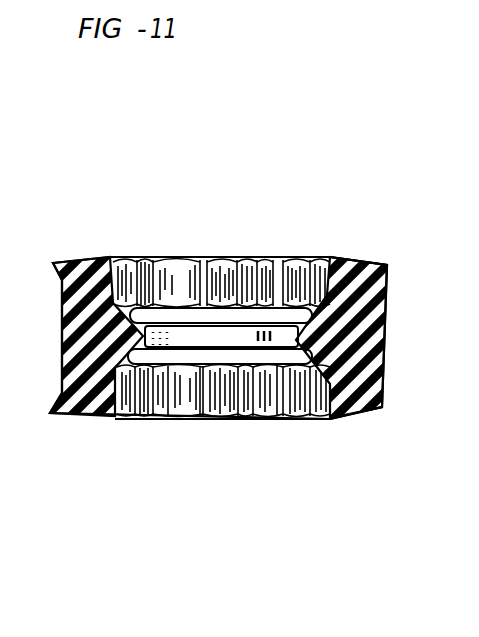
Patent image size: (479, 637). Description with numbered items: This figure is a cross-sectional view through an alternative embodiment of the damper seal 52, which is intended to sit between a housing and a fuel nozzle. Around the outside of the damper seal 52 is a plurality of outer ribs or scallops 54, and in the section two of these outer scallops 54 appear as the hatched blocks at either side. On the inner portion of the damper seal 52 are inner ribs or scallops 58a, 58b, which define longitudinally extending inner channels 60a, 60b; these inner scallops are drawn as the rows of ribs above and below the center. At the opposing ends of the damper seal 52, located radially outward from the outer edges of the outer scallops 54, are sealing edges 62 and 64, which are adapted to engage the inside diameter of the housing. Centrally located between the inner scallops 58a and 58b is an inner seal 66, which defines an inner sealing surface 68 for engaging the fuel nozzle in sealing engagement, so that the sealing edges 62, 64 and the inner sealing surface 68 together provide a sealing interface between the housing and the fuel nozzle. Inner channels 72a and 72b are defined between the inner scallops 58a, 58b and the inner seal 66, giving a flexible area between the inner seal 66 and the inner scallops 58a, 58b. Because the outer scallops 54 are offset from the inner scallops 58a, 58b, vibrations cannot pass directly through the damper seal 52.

The damper seal 52 is at (364, 452).
The outer ribs or scallops 54 is at (381, 319).
The inner rib or scallop 58a is at (147, 254).
The inner rib or scallop 58b is at (140, 420).
The inner channel 60a is at (313, 256).
The inner channel 60b is at (110, 420).
The sealing edge 62 is at (387, 264).
The sealing edge 64 is at (382, 407).
The inner seal 66 is at (157, 340).
The inner sealing surface 68 is at (258, 324).
The inner channel 72a is at (363, 256).
The inner channel 72b is at (373, 417).